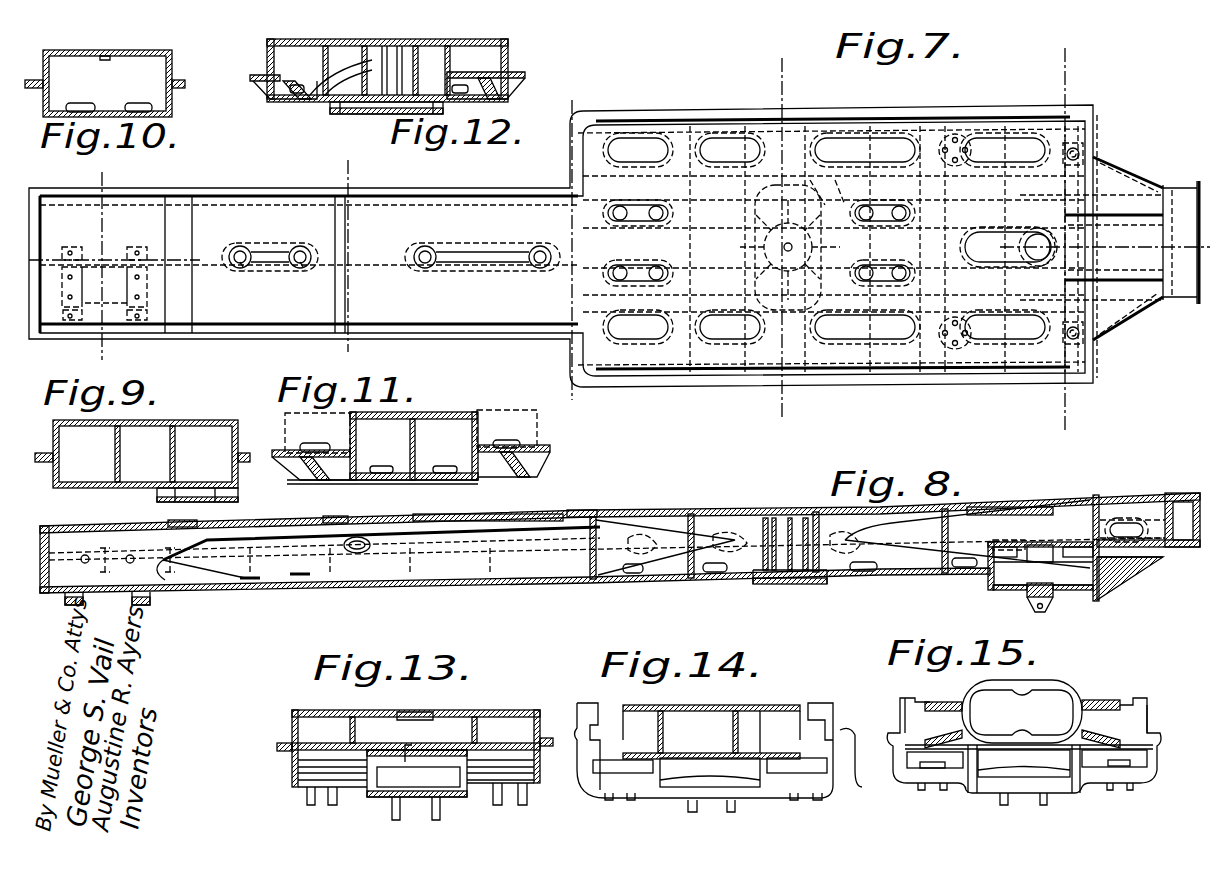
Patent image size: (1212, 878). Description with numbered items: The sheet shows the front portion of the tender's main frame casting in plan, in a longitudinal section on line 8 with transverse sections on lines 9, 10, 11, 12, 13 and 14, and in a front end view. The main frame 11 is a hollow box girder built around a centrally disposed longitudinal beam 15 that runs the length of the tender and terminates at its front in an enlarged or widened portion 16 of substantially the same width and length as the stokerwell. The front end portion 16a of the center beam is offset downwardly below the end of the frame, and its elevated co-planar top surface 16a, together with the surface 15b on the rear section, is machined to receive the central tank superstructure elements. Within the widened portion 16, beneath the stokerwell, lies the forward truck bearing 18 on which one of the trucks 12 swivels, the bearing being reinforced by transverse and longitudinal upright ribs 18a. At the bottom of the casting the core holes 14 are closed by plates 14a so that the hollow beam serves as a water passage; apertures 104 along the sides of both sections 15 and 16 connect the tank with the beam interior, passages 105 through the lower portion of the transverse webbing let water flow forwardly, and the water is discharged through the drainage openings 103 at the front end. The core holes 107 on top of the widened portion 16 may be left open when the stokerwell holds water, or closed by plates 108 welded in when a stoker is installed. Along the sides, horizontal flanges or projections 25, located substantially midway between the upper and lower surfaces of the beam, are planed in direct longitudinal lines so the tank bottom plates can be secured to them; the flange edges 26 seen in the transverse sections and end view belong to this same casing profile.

In FIG. 7, the section line 8— 8 is at (23, 242).
In FIG. 7, the section line 9— 9 is at (118, 171).
In FIG. 7, the section line 10— 10 is at (364, 163).
In FIG. 7, the main frame 11 is at (572, 100).
In FIG. 15, the main frame 11 is at (1108, 664).
In FIG. 7, the trucks 12 is at (796, 55).
In FIG. 7, the section line 13— 13 is at (1072, 39).
In FIG. 7, the core holes 14 is at (240, 248).
In FIG. 8, the core holes 14 is at (252, 572).
In FIG. 7, the plates 14a is at (243, 268).
In FIG. 8, the plates 14a is at (245, 582).
In FIG. 9, the longitudinal beam 15 is at (186, 420).
In FIG. 11, the longitudinal beam 15 is at (440, 412).
In FIG. 7, the elevated co-planar surface 15b is at (190, 196).
In FIG. 7, the widened portion 16 is at (885, 118).
In FIG. 11, the widened portion 16 is at (515, 402).
In FIG. 13, the widened portion 16 is at (490, 712).
In FIG. 14, the widened portion 16 is at (785, 705).
In FIG. 15, the widened portion 16 is at (1120, 705).
In FIG. 7, the front end portion / elevated co-planar surface 16a is at (666, 136).
In FIG. 12, the front end portion / elevated co-planar surface 16a is at (266, 43).
In FIG. 13, the front end portion / elevated co-planar surface 16a is at (297, 710).
In FIG. 14, the front end portion / elevated co-planar surface 16a is at (710, 732).
In FIG. 7, the forward truck bearing 18 is at (800, 190).
In FIG. 8, the forward truck bearing 18 is at (810, 540).
In FIG. 12, the forward truck bearing 18 is at (388, 45).
In FIG. 7, the upright ribs 18a is at (838, 190).
In FIG. 8, the upright ribs 18a is at (792, 548).
In FIG. 12, the upright ribs 18a is at (322, 98).
In FIG. 7, the horizontal flanges 25 is at (268, 188).
In FIG. 9, the horizontal flanges 25 is at (40, 452).
In FIG. 13, the casing flange 26 is at (288, 745).
In FIG. 14, the casing flange 26 is at (592, 696).
In FIG. 15, the casing flange 26 is at (897, 720).
In FIG. 7, the drainage openings 103 is at (955, 134).
In FIG. 8, the drainage openings 103 is at (985, 580).
In FIG. 8, the apertures 104 is at (360, 538).
In FIG. 11, the apertures 104 is at (310, 443).
In FIG. 8, the passages 105 is at (630, 574).
In FIG. 10, the passages 105 is at (80, 103).
In FIG. 12, the passages 105 is at (275, 75).
In FIG. 11, the passages 105 is at (383, 466).
In FIG. 7, the core holes 107 is at (630, 150).
In FIG. 8, the core holes 107 is at (1035, 500).
In FIG. 8, the plates 108 is at (985, 506).